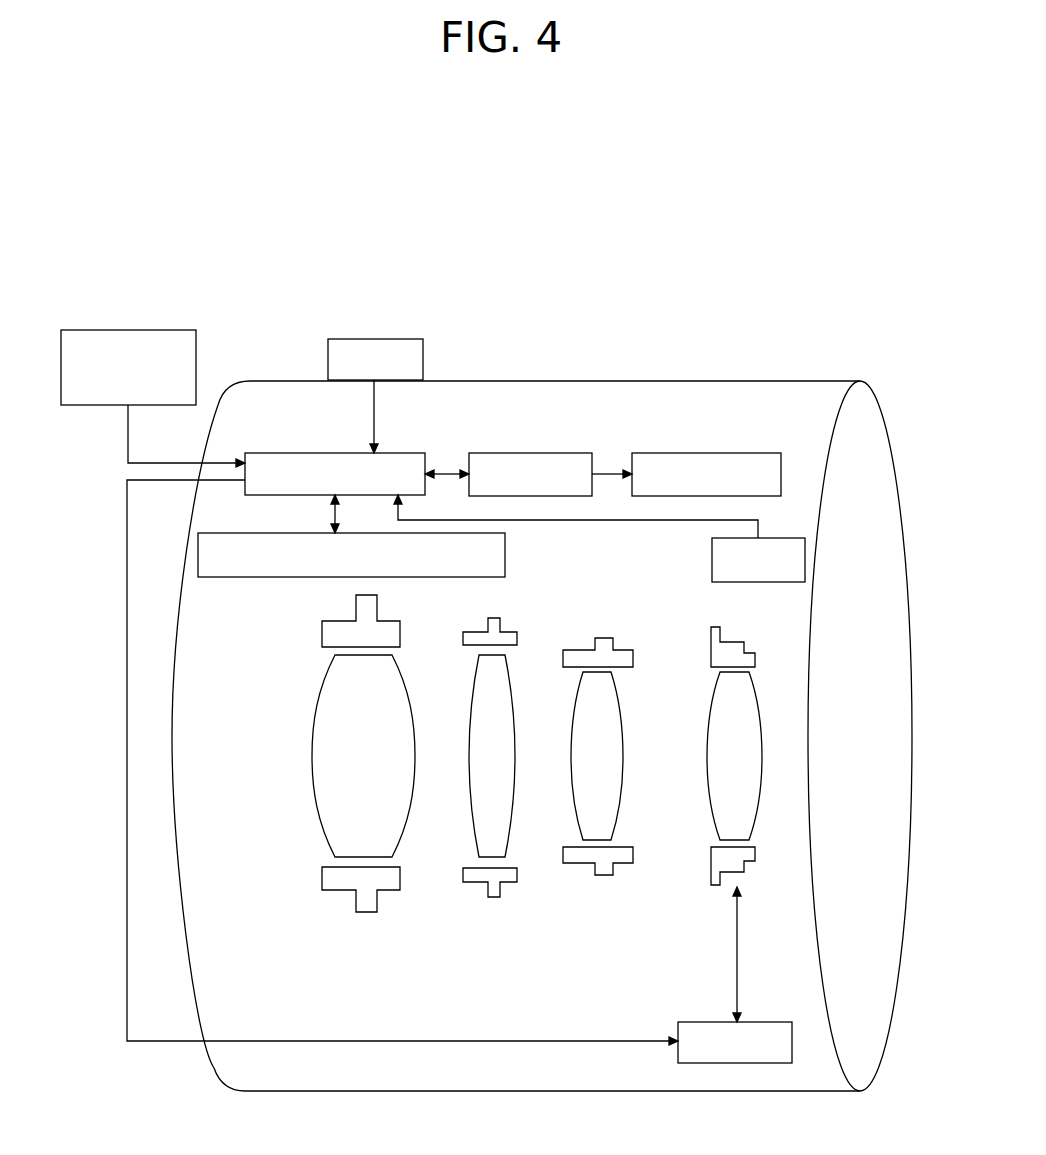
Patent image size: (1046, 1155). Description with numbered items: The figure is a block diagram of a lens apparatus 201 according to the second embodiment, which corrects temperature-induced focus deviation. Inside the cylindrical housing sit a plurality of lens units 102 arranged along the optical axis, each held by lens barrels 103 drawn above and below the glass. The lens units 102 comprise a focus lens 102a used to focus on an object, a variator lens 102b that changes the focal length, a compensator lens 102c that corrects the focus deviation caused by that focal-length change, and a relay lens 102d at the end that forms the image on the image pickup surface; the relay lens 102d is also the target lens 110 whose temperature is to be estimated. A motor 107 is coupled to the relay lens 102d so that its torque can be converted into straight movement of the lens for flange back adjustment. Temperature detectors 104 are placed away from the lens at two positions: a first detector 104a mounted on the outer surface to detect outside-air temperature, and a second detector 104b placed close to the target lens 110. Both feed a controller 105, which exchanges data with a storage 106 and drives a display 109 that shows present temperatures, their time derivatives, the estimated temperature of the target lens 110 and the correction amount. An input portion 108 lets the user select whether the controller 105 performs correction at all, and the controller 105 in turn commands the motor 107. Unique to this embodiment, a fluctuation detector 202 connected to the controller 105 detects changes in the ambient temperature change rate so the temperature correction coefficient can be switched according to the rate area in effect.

The lens apparatus 201 is at (872, 433).
The input portion 108 is at (152, 330).
The controller 105 is at (408, 453).
The storage 106 is at (540, 453).
The display 109 is at (685, 453).
The fluctuation detector 202 is at (246, 577).
The temperature detectors 104 is at (355, 264).
The temperature detector (first detector) 104a is at (378, 338).
The temperature detector (second detector) 104b is at (793, 538).
The lens units 102 is at (260, 958).
The focus lens 102a is at (325, 837).
The variator lens 102b is at (478, 830).
The compensator lens 102c is at (574, 820).
The relay lens 102d is at (697, 816).
The target lens 110 is at (709, 722).
The lens barrels 103 is at (712, 638).
The motor 107 is at (763, 1022).